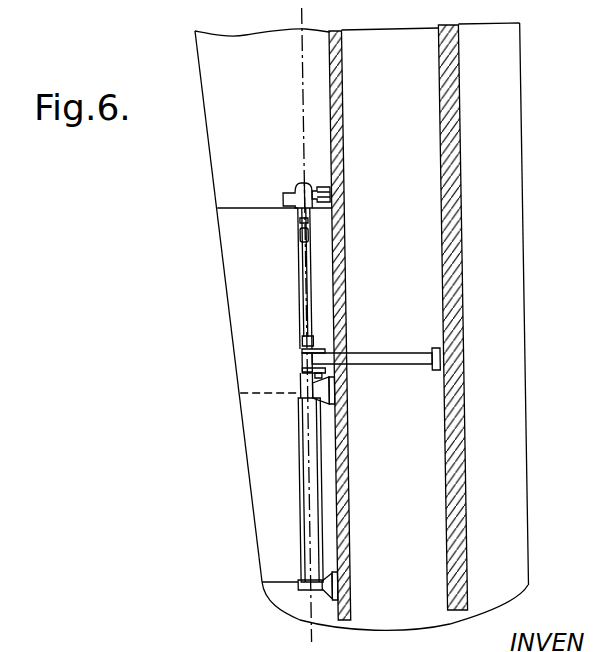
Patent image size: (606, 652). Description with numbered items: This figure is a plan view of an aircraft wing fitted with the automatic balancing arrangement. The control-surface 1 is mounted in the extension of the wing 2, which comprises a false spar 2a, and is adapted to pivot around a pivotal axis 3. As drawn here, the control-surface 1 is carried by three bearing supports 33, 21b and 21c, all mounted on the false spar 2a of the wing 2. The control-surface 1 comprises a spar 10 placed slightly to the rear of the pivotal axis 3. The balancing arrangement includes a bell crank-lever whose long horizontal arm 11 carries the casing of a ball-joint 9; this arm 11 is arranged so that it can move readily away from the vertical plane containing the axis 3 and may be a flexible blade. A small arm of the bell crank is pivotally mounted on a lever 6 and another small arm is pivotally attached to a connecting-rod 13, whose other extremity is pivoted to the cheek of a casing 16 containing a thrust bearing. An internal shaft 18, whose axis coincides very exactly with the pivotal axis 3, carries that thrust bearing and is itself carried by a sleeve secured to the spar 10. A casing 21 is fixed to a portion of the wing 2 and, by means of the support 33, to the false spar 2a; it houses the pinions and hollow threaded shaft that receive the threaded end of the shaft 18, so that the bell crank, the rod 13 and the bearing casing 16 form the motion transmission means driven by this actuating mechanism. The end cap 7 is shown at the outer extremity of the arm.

The control-surface 1 is at (224, 237).
The wing 2 is at (501, 252).
The false spar 2a is at (329, 66).
The pivotal axis 3 is at (296, 122).
The lever 6 is at (365, 363).
The end cap of arm 7 is at (425, 370).
The ball-joint 9 is at (296, 367).
The spar 10 is at (292, 265).
The long horizontal arm 11 is at (307, 343).
The connecting-rod 13 is at (304, 307).
The casing 16 is at (303, 236).
The internal shaft 18 is at (305, 224).
The casing 21 is at (284, 194).
The bearing support 21b is at (294, 391).
The bearing support 21c is at (276, 588).
The support 33 is at (320, 182).